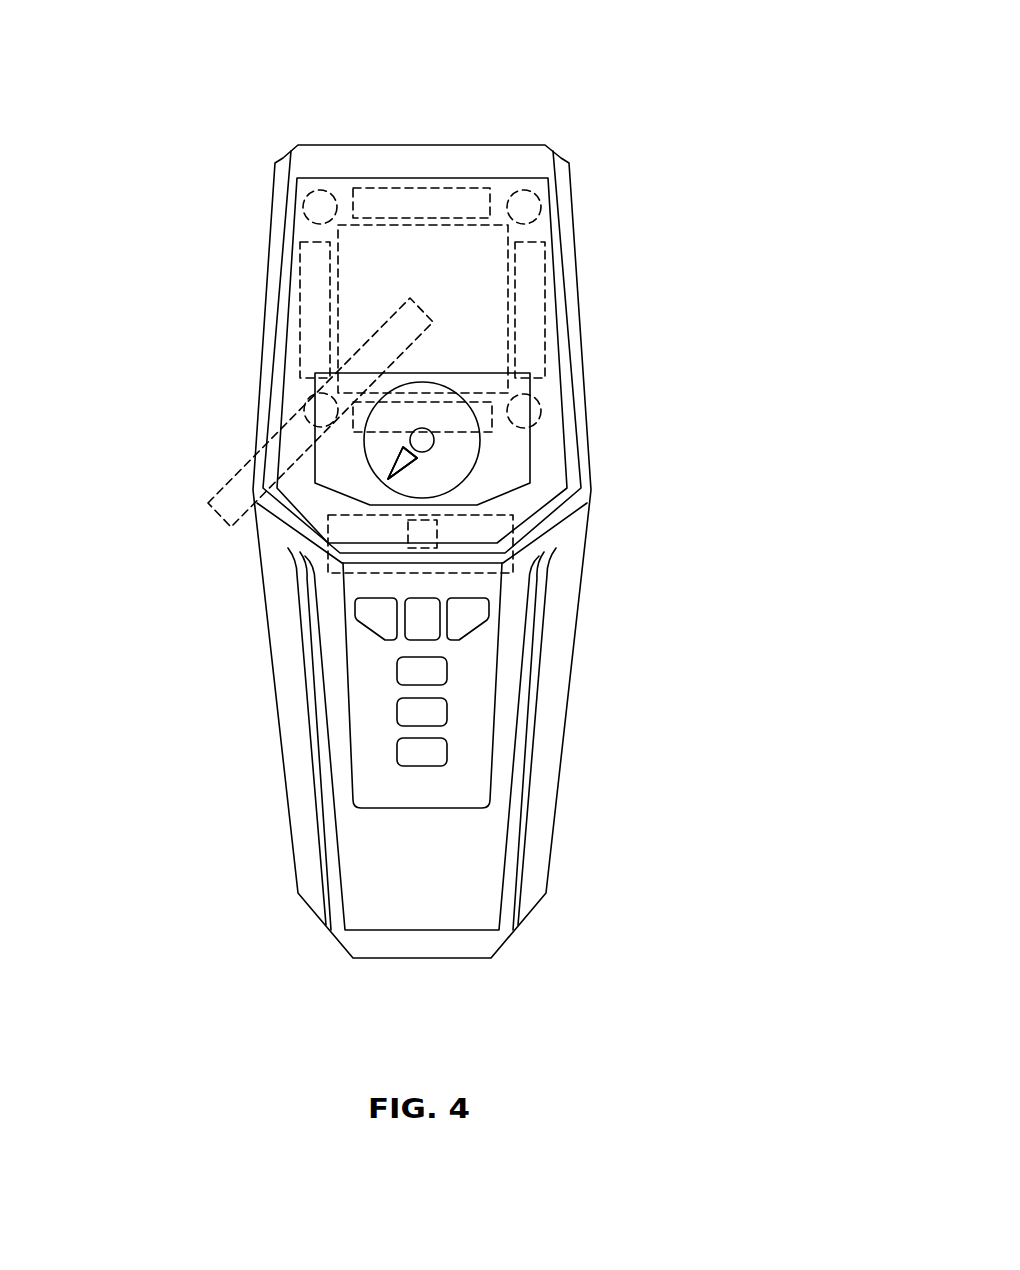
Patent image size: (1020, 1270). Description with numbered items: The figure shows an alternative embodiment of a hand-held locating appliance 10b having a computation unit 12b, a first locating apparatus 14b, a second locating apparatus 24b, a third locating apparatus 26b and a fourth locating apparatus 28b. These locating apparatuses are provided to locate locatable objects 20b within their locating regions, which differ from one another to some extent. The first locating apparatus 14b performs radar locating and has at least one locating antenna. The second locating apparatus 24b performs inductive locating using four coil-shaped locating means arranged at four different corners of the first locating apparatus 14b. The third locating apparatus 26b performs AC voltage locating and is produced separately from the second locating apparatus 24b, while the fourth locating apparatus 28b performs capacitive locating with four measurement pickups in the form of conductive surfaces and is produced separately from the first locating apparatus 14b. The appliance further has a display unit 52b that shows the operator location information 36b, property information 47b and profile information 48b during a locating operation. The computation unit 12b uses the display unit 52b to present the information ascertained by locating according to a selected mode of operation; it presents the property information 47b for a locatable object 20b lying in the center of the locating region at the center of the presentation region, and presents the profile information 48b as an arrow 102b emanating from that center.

The hand-held locating appliance 10b is at (568, 108).
The computation unit 12b is at (505, 523).
The first locating apparatus 14b is at (497, 273).
The locatable object 20b is at (240, 482).
The second locating apparatus 24b is at (304, 207).
The third locating apparatus 26b is at (424, 200).
The fourth locating apparatus 28b is at (418, 552).
The location information 36b is at (368, 462).
The property information 47b is at (402, 463).
The profile information 48b is at (402, 463).
The display unit 52b is at (515, 466).
The arrow 102b is at (368, 483).